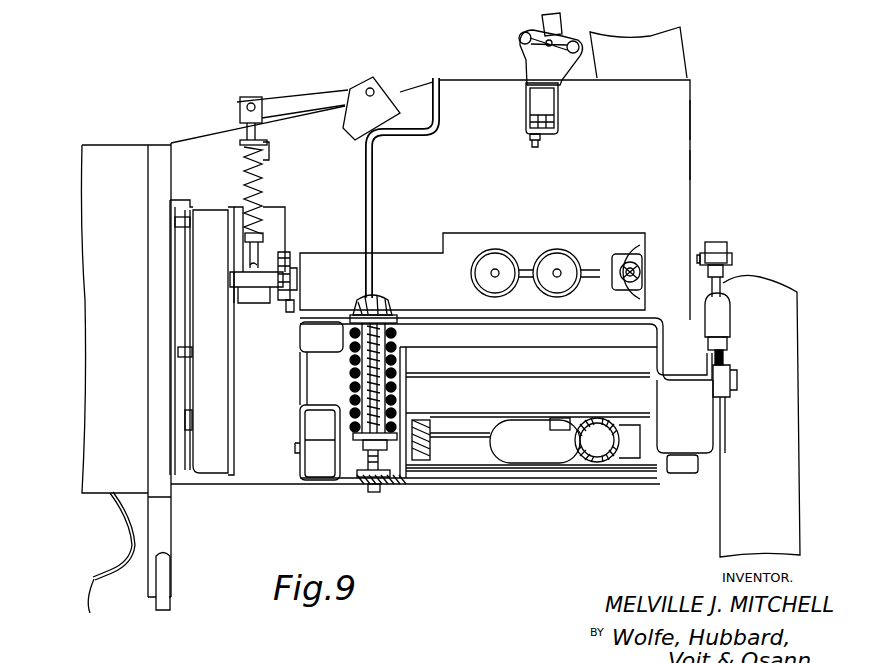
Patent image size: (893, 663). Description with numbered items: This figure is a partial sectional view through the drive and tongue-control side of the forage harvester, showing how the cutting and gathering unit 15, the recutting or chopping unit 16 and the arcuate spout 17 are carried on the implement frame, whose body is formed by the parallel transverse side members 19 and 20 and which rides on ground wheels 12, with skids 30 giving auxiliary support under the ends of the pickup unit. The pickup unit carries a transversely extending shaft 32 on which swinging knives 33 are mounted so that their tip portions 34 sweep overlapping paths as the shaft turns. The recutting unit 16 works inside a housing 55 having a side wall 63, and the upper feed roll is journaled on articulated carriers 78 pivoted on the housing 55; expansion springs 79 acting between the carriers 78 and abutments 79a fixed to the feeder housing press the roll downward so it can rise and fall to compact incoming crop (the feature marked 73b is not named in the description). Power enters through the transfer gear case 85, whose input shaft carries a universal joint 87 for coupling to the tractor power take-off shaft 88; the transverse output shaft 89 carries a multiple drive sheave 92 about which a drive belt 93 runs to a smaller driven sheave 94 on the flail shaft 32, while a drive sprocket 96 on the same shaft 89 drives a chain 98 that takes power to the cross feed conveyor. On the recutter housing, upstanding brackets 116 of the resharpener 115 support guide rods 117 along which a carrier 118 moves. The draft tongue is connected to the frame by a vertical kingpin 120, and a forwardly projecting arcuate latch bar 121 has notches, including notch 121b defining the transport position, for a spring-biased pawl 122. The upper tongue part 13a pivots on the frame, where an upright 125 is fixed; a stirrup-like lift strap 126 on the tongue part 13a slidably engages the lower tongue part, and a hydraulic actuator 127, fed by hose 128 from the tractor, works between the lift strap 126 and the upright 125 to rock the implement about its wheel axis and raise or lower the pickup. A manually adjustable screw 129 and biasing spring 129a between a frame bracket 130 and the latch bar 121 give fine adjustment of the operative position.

The ground wheels 12 is at (793, 447).
The upper tongue part 13a is at (426, 462).
The cutting and gathering unit 15 is at (116, 143).
The recutting unit 16 is at (692, 207).
The arcuate spout 17 is at (683, 58).
The transverse side member 19 is at (675, 474).
The transverse side member 20 is at (322, 484).
The skids 30 is at (162, 612).
The flail shaft 32 is at (191, 425).
The swinging knives 33 is at (121, 524).
The tip portions 34 is at (97, 605).
The recutter housing 55 is at (692, 120).
The side wall 63 is at (682, 163).
The pin 73b is at (253, 270).
The articulated carriers 78 is at (240, 103).
The expansion springs 79 is at (243, 173).
The abutments 79a is at (268, 155).
The transfer gear case 85 is at (508, 233).
The universal joint 87 is at (613, 252).
The power take-off shaft 88 is at (646, 280).
The transverse output shaft 89 is at (293, 306).
The multiple drive sheave 92 is at (229, 337).
The drive belt 93 is at (207, 471).
The driven sheave 94 is at (231, 468).
The drive sprocket 96 is at (286, 250).
The drive chain 98 is at (291, 258).
The resharpener 115 is at (514, 40).
The upstanding brackets 116 is at (535, 100).
The guide rods 117 is at (540, 48).
The carrier 118 is at (563, 20).
The kingpin 120 is at (517, 465).
The latch bar 121 is at (505, 417).
The positioning notch 121b is at (435, 417).
The spring-biased pawl 122 is at (593, 417).
The upright 125 is at (718, 243).
The lift strap 126 is at (622, 470).
The hydraulic actuator 127 is at (724, 315).
The hose 128 is at (724, 355).
The manually adjustable screw 129 is at (374, 182).
The biasing spring 129a is at (348, 388).
The bracket 130 is at (388, 298).